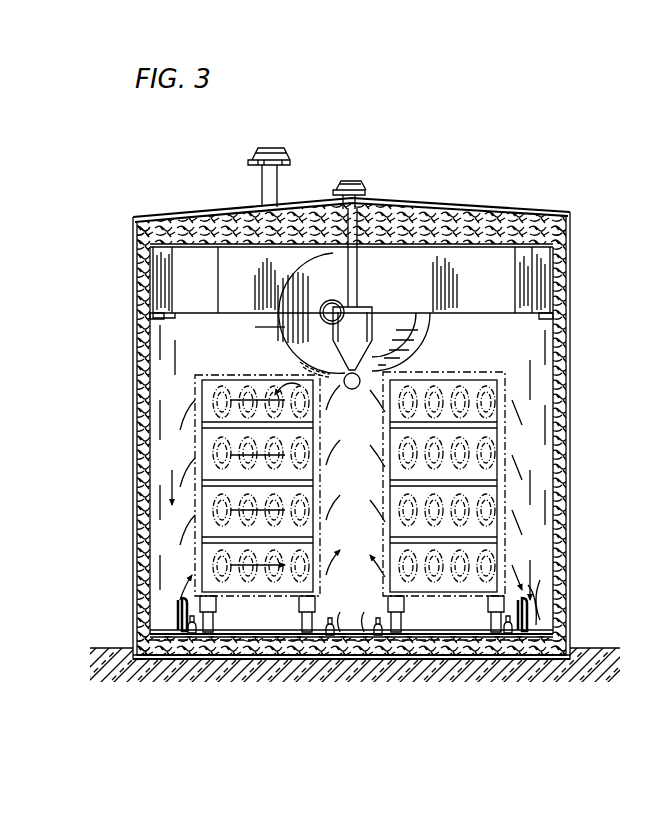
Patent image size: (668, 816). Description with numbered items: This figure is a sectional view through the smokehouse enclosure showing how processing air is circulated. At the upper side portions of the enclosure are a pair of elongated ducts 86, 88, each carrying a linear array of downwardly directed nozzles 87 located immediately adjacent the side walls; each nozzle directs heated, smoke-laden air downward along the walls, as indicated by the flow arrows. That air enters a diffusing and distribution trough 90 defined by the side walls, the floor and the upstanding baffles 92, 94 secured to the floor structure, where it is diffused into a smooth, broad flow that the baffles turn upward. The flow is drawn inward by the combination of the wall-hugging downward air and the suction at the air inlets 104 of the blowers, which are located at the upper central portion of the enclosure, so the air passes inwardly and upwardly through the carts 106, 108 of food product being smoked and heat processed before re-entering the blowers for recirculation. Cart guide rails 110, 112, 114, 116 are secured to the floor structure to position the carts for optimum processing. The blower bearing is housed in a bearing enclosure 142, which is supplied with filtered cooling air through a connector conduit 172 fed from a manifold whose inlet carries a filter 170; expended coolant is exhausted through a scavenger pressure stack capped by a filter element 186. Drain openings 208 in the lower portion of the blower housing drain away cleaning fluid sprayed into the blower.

The elongated duct 86 is at (190, 302).
The nozzle 87 is at (152, 320).
The elongated duct 88 is at (522, 296).
The diffusing and distribution trough 90 is at (545, 612).
The upstanding baffle 92 is at (542, 603).
The upstanding baffle 94 is at (178, 606).
The air inlet 104 is at (300, 322).
The cart 106 is at (258, 372).
The cart 108 is at (446, 371).
The cart guide rail 110 is at (196, 650).
The cart guide rail 112 is at (337, 652).
The cart guide rail 114 is at (368, 640).
The cart guide rail 116 is at (510, 656).
The bearing enclosure 142 is at (372, 324).
The filter 170 is at (360, 186).
The connector conduit 172 is at (357, 274).
The filter element 186 is at (283, 150).
The drain opening 208 is at (350, 391).